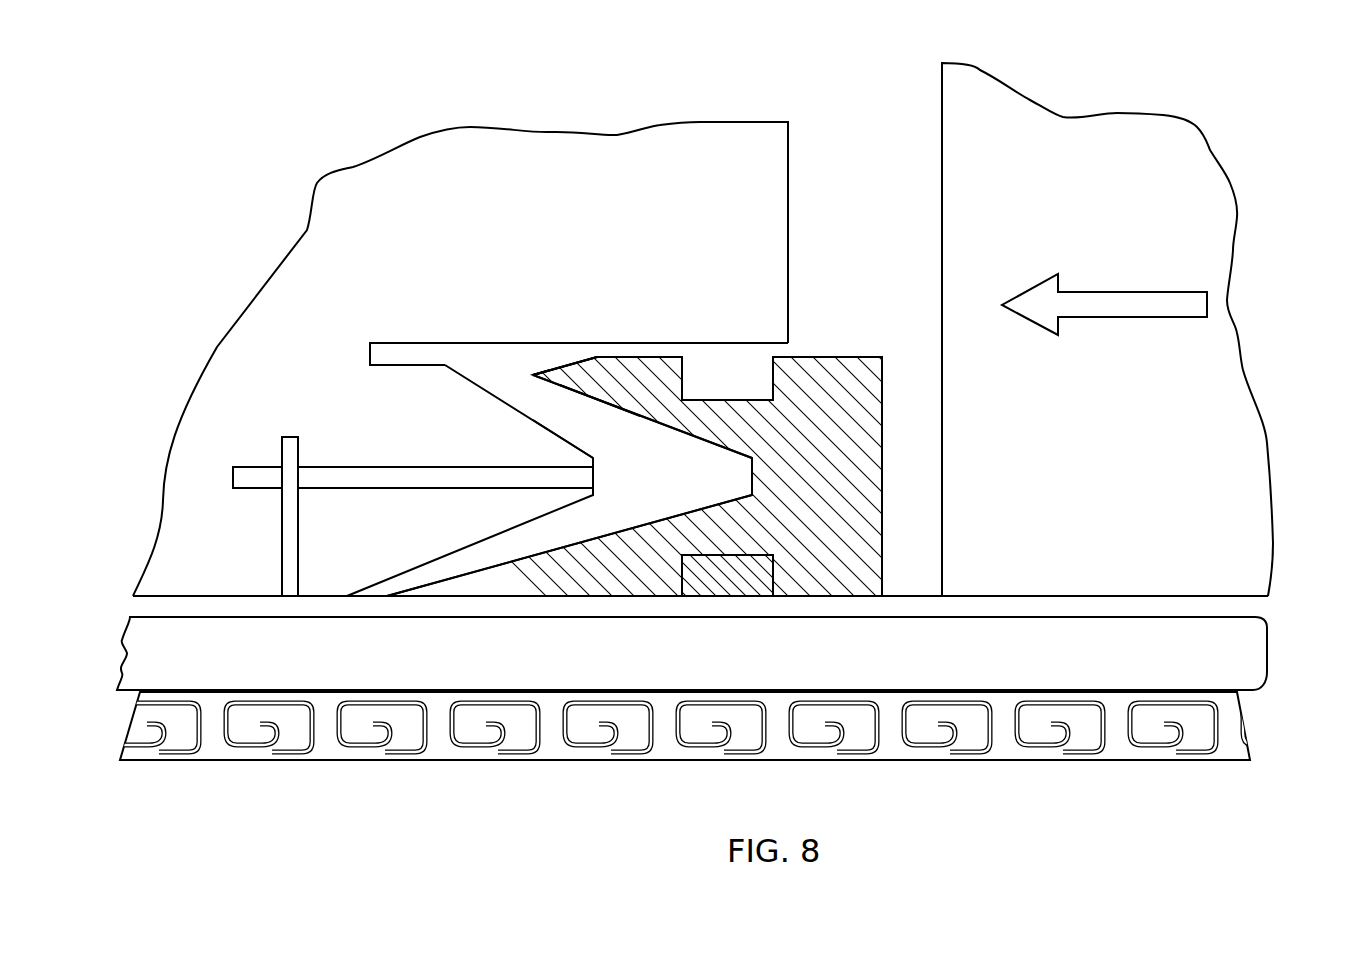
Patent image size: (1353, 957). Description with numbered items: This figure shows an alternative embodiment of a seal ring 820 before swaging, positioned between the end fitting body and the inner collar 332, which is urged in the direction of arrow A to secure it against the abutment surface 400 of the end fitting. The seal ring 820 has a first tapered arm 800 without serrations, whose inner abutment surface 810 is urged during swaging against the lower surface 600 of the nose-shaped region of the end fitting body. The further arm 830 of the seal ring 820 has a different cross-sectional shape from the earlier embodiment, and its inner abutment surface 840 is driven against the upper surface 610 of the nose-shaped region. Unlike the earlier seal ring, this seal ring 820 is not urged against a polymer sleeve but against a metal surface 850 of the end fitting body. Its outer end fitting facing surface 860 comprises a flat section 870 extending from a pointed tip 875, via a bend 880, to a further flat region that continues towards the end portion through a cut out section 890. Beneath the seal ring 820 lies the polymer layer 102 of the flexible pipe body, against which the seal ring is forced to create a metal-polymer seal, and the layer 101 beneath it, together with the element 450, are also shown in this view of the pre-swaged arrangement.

The abutment surface 400 is at (790, 178).
The guide rail 450 is at (363, 475).
The lower surface 600 is at (447, 556).
The upper surface 610 is at (527, 418).
The first tapered arm 800 is at (600, 578).
The inner abutment surface 810 is at (637, 510).
The seal ring 820 is at (830, 320).
The further arm 830 is at (663, 357).
The inner abutment surface 840 is at (623, 410).
The metal surface 850 is at (497, 360).
The outer end fitting facing surface 860 is at (608, 342).
The flat section 870 is at (572, 362).
The pointed tip 875 is at (540, 373).
The bend 880 is at (598, 373).
The cut out section 890 is at (735, 393).
The inner collar 332 is at (1125, 476).
The polymer layer 102 is at (1237, 635).
The corrugated layer 101 is at (403, 740).